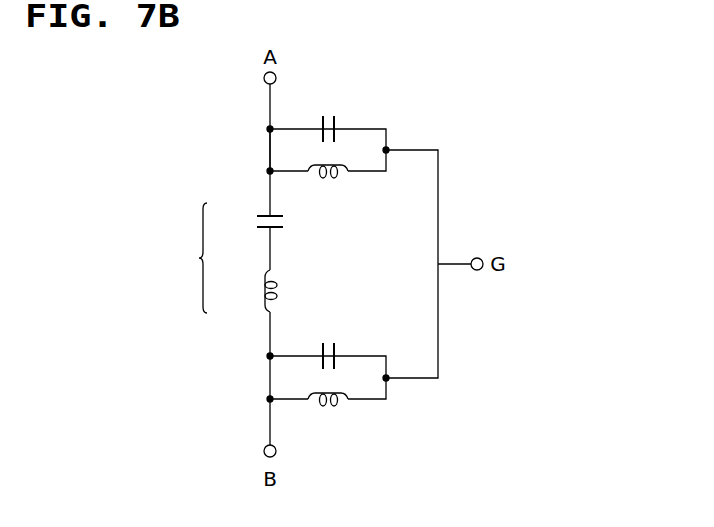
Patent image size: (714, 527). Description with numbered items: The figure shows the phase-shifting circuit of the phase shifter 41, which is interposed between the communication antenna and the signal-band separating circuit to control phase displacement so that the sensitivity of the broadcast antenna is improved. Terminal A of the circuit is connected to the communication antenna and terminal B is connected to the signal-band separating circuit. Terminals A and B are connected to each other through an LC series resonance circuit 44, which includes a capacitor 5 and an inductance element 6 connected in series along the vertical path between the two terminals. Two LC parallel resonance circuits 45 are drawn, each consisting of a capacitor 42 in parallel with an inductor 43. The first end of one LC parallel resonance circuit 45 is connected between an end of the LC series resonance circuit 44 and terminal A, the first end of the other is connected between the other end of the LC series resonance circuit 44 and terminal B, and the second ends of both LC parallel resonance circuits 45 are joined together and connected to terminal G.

The capacitor 5 is at (256, 219).
The inductance element 6 is at (263, 291).
The phase shifter 41 is at (483, 169).
The capacitor 42 is at (327, 113).
The inductor 43 is at (327, 181).
The LC series resonance circuit 44 is at (226, 258).
The LC parallel resonance circuit 45 is at (388, 113).